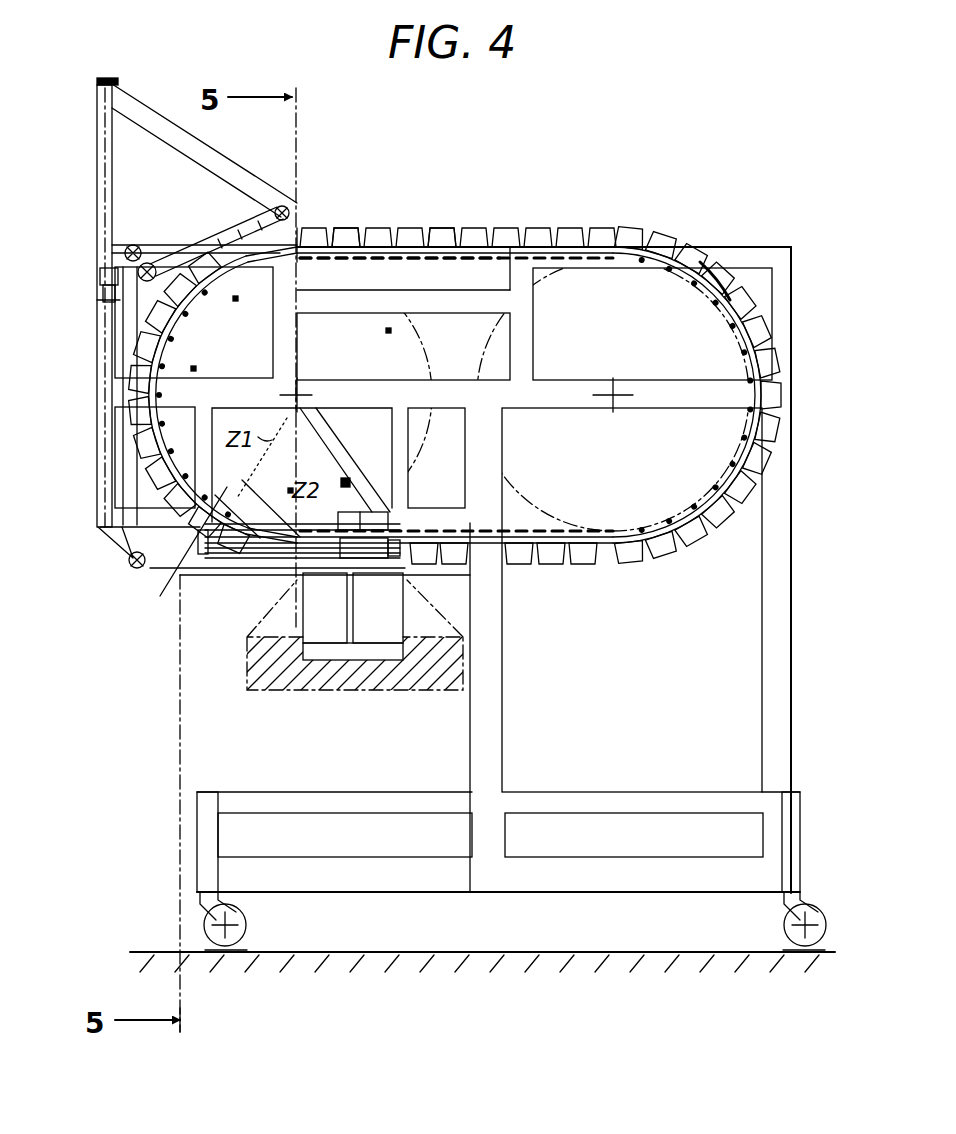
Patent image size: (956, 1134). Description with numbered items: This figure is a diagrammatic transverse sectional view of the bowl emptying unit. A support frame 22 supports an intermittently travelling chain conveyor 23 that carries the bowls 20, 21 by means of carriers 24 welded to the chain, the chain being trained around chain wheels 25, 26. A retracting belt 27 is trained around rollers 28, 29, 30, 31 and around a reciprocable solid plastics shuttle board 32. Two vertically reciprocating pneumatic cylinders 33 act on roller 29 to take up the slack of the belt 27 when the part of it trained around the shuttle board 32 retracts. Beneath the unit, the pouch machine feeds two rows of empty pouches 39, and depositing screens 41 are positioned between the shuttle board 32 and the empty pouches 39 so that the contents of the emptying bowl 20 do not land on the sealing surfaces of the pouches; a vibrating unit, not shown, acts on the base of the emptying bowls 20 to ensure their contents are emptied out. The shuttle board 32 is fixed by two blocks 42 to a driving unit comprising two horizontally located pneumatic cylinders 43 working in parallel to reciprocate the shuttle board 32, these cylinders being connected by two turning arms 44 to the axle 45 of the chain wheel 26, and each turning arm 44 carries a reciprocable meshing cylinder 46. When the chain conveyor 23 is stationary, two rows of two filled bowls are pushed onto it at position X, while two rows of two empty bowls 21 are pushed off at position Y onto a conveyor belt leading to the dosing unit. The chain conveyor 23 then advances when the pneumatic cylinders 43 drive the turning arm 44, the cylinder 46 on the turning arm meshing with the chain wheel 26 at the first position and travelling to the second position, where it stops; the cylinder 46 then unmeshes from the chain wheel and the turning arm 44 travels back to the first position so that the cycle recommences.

The bowl 20 is at (345, 232).
The empty bowl 21 is at (443, 232).
The support frame 22 is at (100, 158).
The chain conveyor 23 is at (336, 265).
The carrier 24 is at (401, 246).
The chain wheel 25 is at (712, 435).
The chain wheel 26 is at (160, 596).
The retracting belt 27 is at (235, 228).
The roller 28 is at (290, 210).
The roller 29 is at (134, 245).
The roller 30 is at (153, 264).
The roller 31 is at (130, 565).
The shuttle board 32 is at (395, 565).
The pneumatic cylinder 33 is at (100, 272).
The empty pouch 39 is at (375, 655).
The depositing screen 41 is at (302, 632).
The block 42 is at (395, 515).
The pneumatic cylinder 43 is at (372, 552).
The turning arm 44 is at (338, 447).
The axle 45 is at (300, 392).
The meshing cylinder 46 is at (348, 478).